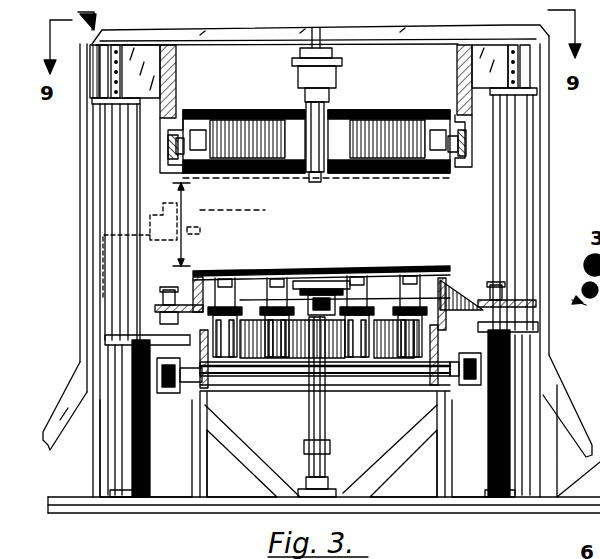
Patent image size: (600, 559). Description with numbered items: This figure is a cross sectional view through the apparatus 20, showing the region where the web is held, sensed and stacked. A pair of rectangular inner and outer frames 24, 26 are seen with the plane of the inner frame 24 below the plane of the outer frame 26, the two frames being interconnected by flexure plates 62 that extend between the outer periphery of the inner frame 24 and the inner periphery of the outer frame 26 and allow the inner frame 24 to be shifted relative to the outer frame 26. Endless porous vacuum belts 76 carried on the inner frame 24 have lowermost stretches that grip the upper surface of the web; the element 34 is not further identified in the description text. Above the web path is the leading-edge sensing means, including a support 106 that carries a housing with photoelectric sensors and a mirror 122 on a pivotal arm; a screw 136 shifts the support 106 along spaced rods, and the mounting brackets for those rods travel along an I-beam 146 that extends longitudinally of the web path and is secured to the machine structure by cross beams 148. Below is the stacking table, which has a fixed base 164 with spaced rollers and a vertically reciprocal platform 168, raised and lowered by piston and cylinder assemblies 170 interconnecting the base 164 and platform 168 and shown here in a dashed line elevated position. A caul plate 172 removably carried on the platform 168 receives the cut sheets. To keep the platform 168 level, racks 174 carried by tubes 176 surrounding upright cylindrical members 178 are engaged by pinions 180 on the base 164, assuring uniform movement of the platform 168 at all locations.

The apparatus 20 is at (563, 163).
The inner frame 24 is at (447, 177).
The outer frame 26 is at (102, 17).
The roller 34 is at (366, 112).
The flexure plates 62 is at (146, 50).
The vacuum belts 76 is at (215, 176).
The support 106 is at (296, 185).
The mirror 122 is at (339, 153).
The screw 136 is at (225, 280).
The I-beam 146 is at (300, 60).
The cross beams 148 is at (188, 31).
The fixed base 164 is at (248, 392).
The platform 168 is at (187, 198).
The piston and cylinder assemblies 170 is at (326, 427).
The caul plate 172 is at (298, 280).
The racks 174 is at (152, 460).
The tubes 176 is at (120, 456).
The cylindrical members 178 is at (185, 290).
The pinions 180 is at (168, 398).